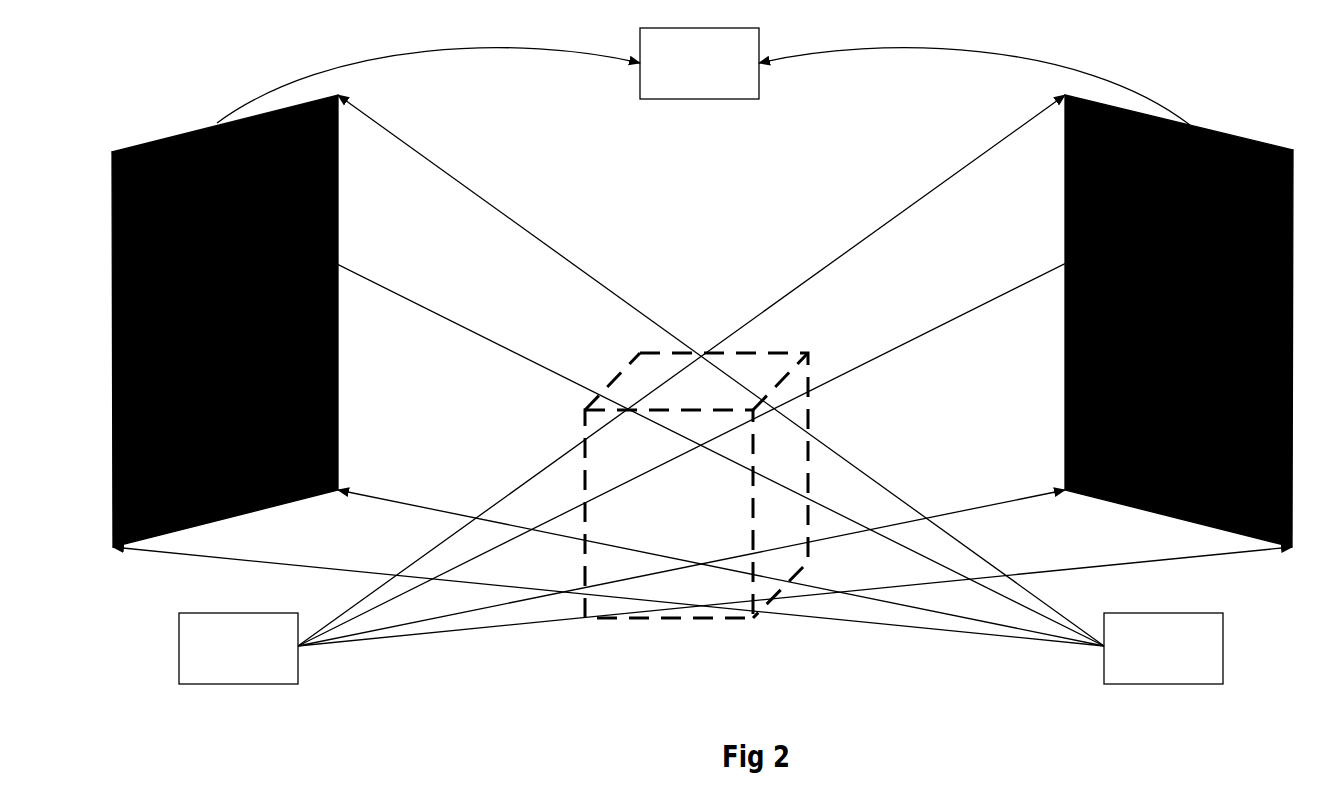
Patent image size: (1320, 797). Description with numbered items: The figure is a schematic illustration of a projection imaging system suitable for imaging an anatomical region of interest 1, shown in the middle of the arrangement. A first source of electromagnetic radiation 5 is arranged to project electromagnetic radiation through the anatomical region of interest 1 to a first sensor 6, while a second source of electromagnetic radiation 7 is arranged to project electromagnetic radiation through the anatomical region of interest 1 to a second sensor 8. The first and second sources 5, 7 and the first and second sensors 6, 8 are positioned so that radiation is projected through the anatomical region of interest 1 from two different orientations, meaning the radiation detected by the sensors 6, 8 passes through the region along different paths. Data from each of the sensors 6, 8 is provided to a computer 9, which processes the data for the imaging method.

The anatomical region of interest 1 is at (667, 618).
The first source of electromagnetic radiation 5 is at (237, 684).
The first sensor 6 is at (1292, 448).
The second source of electromagnetic radiation 7 is at (1162, 684).
The second sensor 8 is at (112, 300).
The computer 9 is at (698, 99).